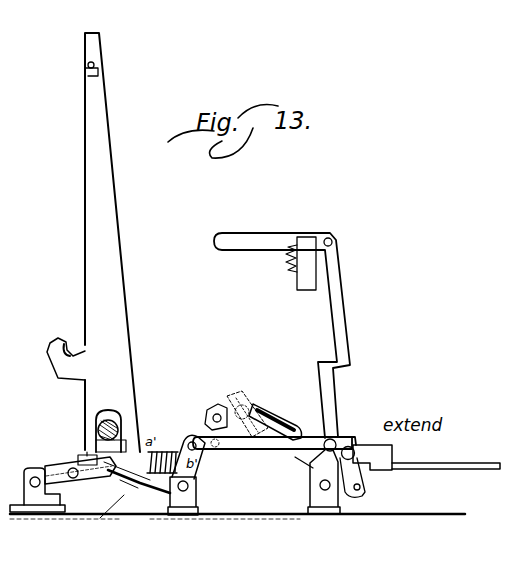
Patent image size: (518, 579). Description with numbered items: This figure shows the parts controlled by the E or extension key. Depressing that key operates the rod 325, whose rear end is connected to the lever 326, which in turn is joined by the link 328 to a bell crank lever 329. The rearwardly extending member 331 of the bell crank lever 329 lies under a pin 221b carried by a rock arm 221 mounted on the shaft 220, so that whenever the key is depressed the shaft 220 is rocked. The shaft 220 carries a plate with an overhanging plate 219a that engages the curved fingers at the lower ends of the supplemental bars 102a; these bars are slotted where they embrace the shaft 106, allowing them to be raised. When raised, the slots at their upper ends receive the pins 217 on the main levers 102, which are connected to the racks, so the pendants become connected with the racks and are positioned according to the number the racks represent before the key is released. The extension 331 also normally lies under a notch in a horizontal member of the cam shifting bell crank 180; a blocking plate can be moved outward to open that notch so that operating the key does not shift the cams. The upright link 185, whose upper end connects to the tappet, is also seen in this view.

The main lever 102 is at (97, 52).
The pin on main lever 217 is at (98, 71).
The supplemental bar 102a is at (120, 313).
The link 185 is at (340, 330).
The shaft 106 is at (125, 424).
The overhanging plate 219a is at (96, 434).
The shaft 220 is at (35, 477).
The rock arm 221 is at (133, 480).
The pin on rock arm 221b is at (138, 482).
The rearwardly extending member 331 is at (133, 486).
The cam shifting bell crank 180 is at (164, 449).
The bell crank lever 329 is at (212, 471).
The link 328 is at (248, 447).
The lever 326 is at (320, 468).
The rod 325 is at (428, 471).